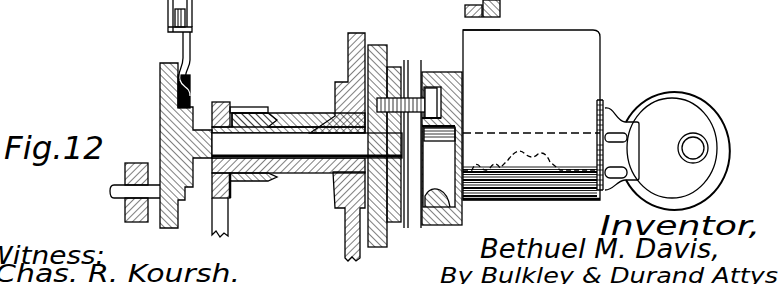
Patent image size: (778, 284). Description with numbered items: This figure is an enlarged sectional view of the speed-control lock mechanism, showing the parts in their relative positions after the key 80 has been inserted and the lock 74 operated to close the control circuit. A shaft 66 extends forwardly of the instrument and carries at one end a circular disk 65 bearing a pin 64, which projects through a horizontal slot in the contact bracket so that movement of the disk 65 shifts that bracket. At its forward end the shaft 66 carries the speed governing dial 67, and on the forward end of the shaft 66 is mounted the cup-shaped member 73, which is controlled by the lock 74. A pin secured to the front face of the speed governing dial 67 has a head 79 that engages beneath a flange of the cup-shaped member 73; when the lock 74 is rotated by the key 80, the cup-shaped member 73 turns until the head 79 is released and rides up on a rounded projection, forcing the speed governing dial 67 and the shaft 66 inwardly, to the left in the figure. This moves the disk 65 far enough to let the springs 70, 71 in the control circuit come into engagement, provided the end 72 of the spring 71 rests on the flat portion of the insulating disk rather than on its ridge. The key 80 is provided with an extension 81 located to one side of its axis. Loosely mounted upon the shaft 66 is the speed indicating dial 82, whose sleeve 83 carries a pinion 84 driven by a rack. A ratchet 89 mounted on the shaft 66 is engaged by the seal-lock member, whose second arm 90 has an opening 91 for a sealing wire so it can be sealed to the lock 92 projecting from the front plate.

The pin 64 is at (121, 198).
The circular disk 65 is at (160, 80).
The shaft 66 is at (275, 116).
The speed governing dial 67 is at (379, 248).
The spring 70 is at (170, 10).
The spring 71 is at (192, 8).
The end of the spring 72 is at (197, 78).
The cup-shaped member 73 is at (445, 220).
The lock 74 is at (597, 44).
The head 79 is at (446, 68).
The key 80 is at (662, 100).
The extension 81 is at (438, 145).
The speed indicating dial 82 is at (348, 235).
The sleeve 83 is at (300, 120).
The pinion 84 is at (258, 183).
The ratchet 89 is at (398, 67).
The second arm 90 is at (463, 8).
The opening 91 is at (465, 10).
The lock 92 is at (500, 8).